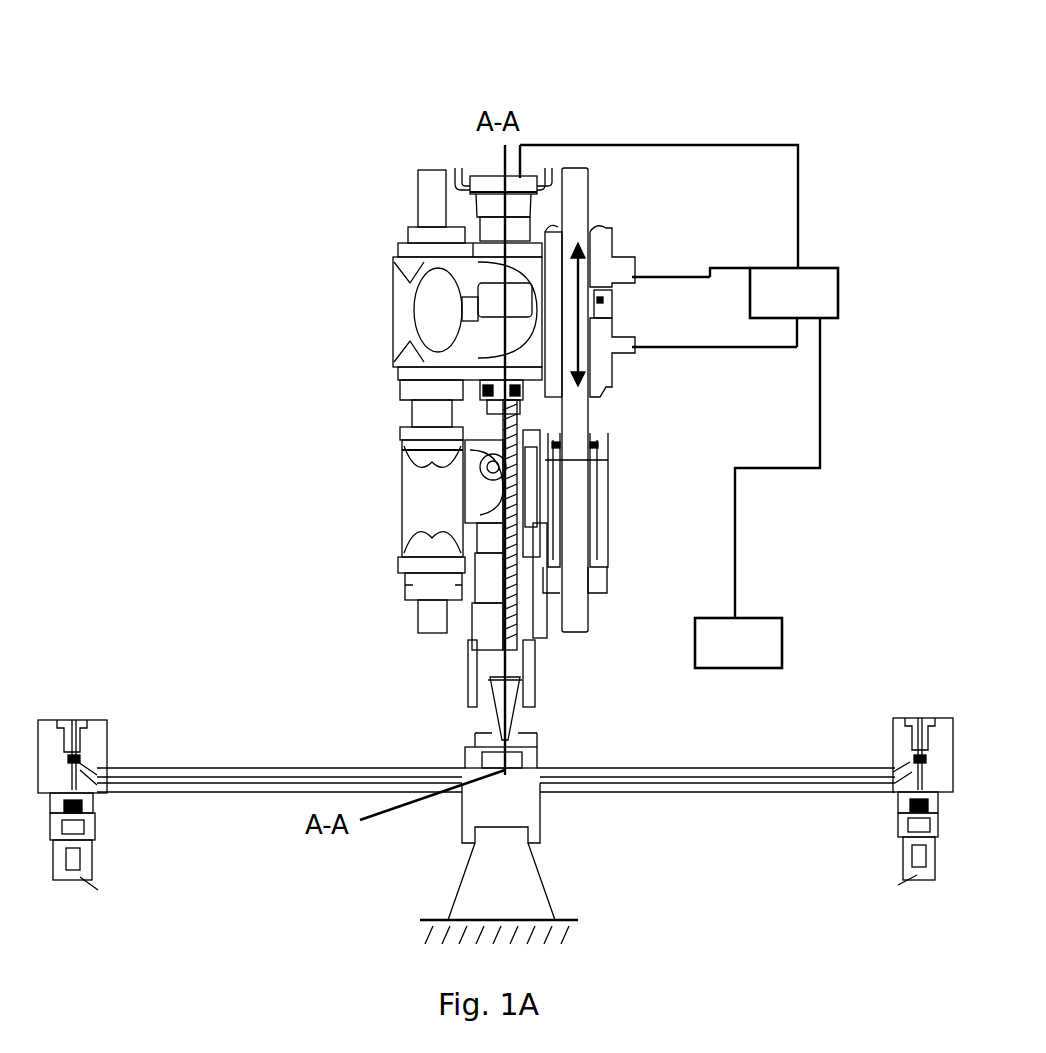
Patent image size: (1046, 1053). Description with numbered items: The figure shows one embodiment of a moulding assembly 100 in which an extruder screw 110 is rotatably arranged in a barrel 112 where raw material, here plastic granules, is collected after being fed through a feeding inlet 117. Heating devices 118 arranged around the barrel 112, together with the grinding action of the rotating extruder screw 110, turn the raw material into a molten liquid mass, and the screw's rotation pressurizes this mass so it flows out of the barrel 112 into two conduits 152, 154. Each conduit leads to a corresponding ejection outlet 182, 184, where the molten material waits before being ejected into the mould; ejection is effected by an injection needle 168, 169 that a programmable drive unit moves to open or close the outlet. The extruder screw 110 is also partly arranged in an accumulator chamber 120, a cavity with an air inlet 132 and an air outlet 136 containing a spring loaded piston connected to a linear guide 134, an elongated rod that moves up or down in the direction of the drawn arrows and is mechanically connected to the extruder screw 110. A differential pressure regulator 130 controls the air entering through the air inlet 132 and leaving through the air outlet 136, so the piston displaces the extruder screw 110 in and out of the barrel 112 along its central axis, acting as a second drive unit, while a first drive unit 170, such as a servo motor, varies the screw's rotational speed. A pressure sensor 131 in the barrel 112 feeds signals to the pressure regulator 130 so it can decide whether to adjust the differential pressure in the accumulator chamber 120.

The moulding assembly 100 is at (165, 80).
The first drive unit 170 is at (472, 162).
The accumulator chamber 120 is at (420, 298).
The feeding inlet 117 is at (482, 462).
The heating devices 118 is at (490, 628).
The extruder screw 110 is at (515, 680).
The barrel 112 is at (545, 643).
The linear guide 134 is at (578, 392).
The air inlet 132 is at (627, 268).
The air outlet 136 is at (628, 347).
The differential pressure regulator 130 is at (679, 381).
The pressure sensor 131 is at (513, 727).
The conduit 152 is at (275, 778).
The conduit 154 is at (578, 780).
The ejection outlet 182 is at (78, 762).
The ejection outlet 184 is at (905, 765).
The injection needle 168 is at (73, 800).
The injection needle 169 is at (907, 837).